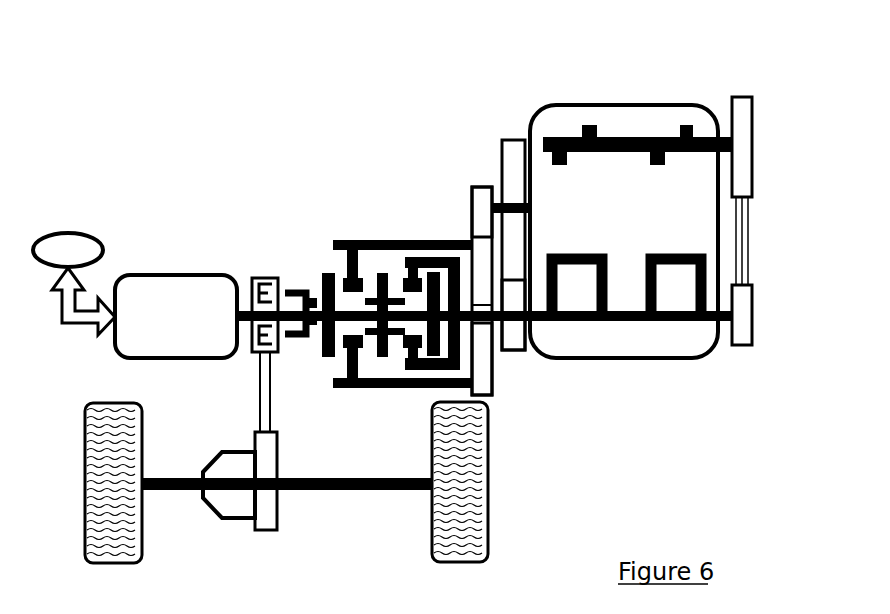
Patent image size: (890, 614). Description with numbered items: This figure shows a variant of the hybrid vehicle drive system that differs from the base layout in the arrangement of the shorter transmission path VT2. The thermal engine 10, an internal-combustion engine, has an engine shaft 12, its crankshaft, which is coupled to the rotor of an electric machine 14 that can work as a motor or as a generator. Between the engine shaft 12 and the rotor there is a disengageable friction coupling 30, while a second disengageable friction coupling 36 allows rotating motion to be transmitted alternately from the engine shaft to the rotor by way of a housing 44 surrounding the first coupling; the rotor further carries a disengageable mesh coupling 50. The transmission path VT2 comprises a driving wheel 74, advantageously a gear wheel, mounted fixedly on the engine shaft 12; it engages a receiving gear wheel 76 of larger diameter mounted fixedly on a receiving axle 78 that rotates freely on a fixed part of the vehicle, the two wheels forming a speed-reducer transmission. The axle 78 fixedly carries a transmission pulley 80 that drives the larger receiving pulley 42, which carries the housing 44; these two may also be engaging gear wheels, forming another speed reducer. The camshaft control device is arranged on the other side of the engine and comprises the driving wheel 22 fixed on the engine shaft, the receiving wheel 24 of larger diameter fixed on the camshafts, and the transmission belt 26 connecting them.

The thermal engine 10 is at (641, 216).
The engine shaft 12 is at (617, 320).
The electric machine 14 is at (159, 328).
The driving wheel 22 is at (750, 333).
The receiving wheel 24 is at (740, 117).
The transmission belt 26 is at (743, 240).
The disengageable friction coupling 30 is at (388, 272).
The disengageable friction coupling 36 is at (337, 270).
The receiving pulley 42 is at (485, 362).
The housing 44 is at (355, 240).
The disengageable coupling 50 is at (295, 357).
The driving wheel 74 is at (520, 345).
The receiving gear wheel 76 is at (517, 150).
The receiving axle 78 is at (506, 218).
The transmission pulley 80 is at (478, 210).
The shorter transmission path VT2 is at (472, 174).